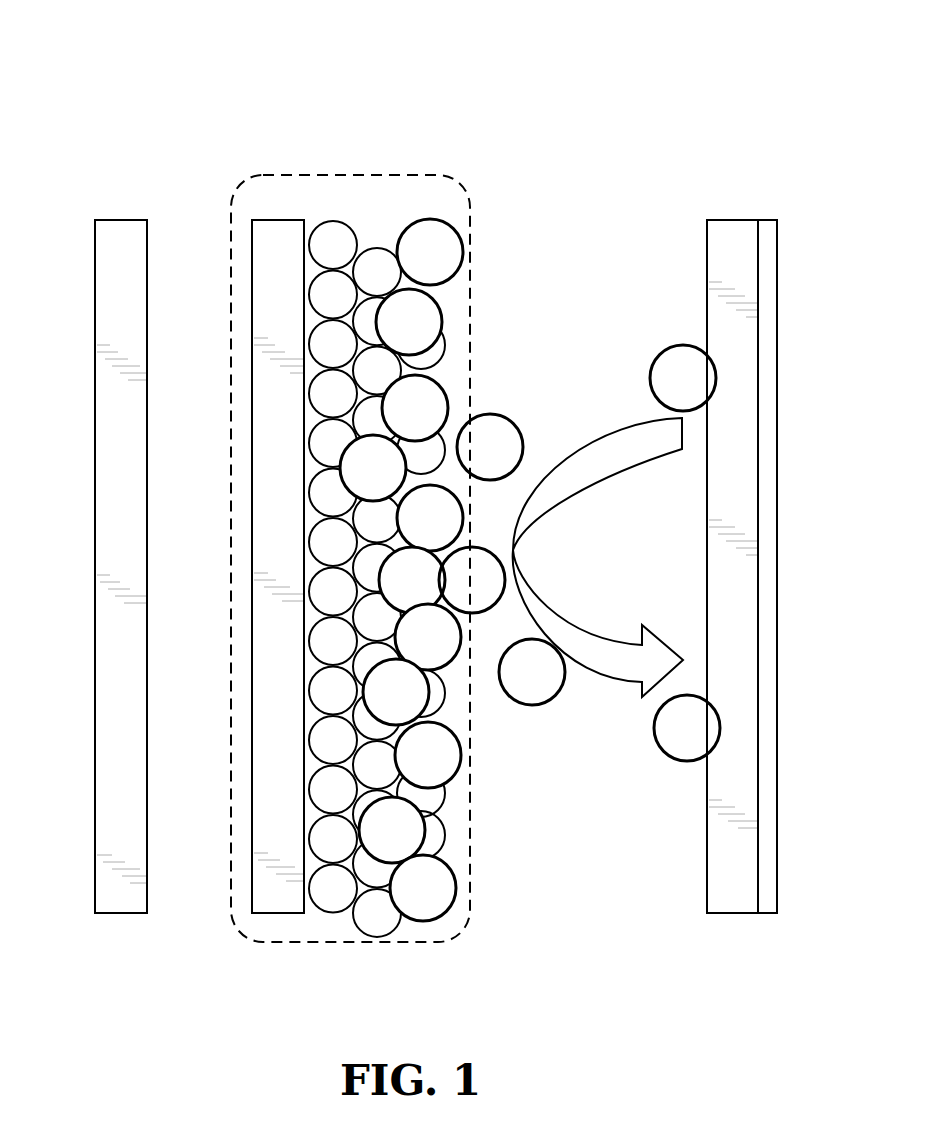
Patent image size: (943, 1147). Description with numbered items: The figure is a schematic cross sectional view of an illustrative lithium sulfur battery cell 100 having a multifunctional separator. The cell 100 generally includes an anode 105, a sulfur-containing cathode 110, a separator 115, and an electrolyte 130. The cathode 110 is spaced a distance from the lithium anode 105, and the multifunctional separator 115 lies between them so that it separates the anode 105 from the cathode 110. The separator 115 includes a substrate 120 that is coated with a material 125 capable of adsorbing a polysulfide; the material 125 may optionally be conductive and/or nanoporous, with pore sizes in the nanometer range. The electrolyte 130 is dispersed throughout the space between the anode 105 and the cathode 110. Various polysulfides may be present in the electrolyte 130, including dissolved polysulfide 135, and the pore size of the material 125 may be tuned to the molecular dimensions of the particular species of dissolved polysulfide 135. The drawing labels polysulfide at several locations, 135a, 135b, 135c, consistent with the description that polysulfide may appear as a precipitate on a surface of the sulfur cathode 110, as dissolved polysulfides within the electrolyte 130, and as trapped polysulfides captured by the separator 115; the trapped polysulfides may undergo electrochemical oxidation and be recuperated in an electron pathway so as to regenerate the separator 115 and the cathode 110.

The cell 100 is at (107, 66).
The anode 105 is at (110, 392).
The cathode 110 is at (768, 262).
The separator 115 is at (243, 185).
The substrate 120 is at (266, 552).
The material 125 is at (323, 903).
The electrolyte 130 is at (567, 278).
The dissolved polysulfide 135 is at (768, 163).
The lithium layer on second electrode 135a is at (735, 907).
The lithium particle in electrolyte 135b is at (542, 705).
The lithium particle in electrode 135c is at (431, 915).